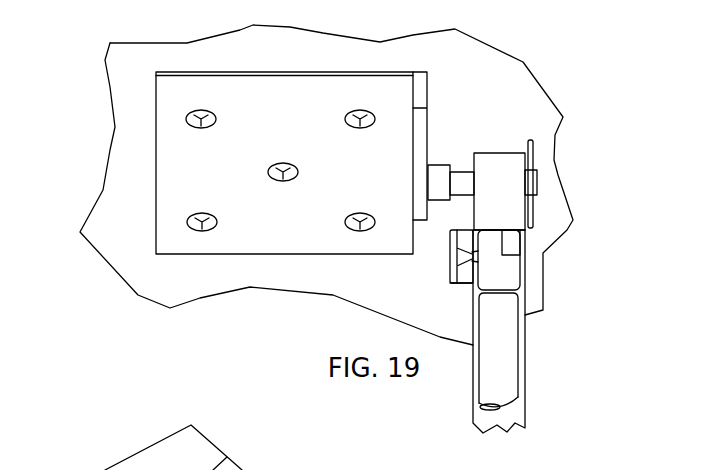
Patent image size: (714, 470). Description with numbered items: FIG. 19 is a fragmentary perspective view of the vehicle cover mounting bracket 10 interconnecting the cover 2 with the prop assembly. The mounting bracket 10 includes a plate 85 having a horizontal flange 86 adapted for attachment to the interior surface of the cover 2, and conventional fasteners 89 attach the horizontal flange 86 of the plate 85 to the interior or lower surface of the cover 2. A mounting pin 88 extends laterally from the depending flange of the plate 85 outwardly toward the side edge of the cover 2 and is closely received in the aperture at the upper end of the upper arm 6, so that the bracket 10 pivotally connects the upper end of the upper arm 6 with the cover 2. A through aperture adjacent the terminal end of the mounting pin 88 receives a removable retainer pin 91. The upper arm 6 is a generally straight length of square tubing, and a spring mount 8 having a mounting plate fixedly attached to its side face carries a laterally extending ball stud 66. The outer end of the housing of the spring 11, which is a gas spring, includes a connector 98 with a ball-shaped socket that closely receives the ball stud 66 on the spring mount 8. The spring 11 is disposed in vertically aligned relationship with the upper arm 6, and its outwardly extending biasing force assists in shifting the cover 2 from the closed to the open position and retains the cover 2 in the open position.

The cover 2 is at (106, 53).
The vehicle cover mounting bracket 10 is at (156, 212).
The horizontal flange 86 is at (243, 82).
The fasteners 89 is at (211, 128).
The plate 85 is at (425, 74).
The mounting pin 88 is at (457, 180).
The retainer pin 91 is at (535, 146).
The ball stud 66 is at (455, 265).
The spring mount 8 is at (451, 283).
The connector 98 is at (508, 265).
The spring 11 is at (510, 345).
The upper arm 6 is at (517, 413).